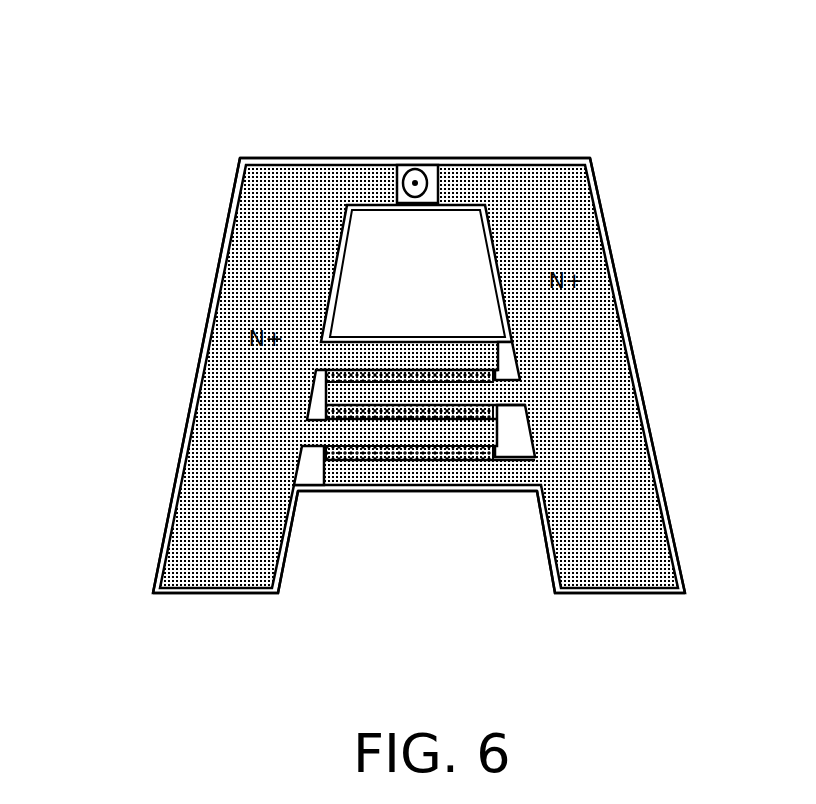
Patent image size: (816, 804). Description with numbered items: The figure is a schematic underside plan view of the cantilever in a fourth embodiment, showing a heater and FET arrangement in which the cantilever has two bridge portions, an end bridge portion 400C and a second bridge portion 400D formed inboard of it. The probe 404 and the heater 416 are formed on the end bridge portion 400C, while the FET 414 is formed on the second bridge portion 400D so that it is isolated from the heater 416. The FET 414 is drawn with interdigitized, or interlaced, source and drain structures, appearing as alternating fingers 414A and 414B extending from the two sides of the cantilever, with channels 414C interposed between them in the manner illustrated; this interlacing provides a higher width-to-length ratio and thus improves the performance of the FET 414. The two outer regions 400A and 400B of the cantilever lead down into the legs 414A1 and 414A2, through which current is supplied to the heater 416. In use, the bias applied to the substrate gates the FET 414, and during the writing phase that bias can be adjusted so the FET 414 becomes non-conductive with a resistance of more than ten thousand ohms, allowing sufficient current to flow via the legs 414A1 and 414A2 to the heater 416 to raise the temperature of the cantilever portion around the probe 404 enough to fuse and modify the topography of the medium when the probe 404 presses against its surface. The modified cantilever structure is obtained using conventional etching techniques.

The probe 404 is at (410, 163).
The heater 416 is at (430, 163).
The FET 414 is at (407, 315).
The left edge of A-shaped device 400A is at (200, 365).
The right edge of A-shaped device 400B is at (636, 345).
The bridge portion 400C is at (302, 158).
The second bridge portion 400D is at (472, 492).
The FET drain/source fingers (first set) 414A is at (487, 352).
The FET drain/source fingers (second set) 414B is at (343, 397).
The channels 414C is at (433, 380).
The leg 414A1 is at (222, 560).
The leg 414A2 is at (610, 550).